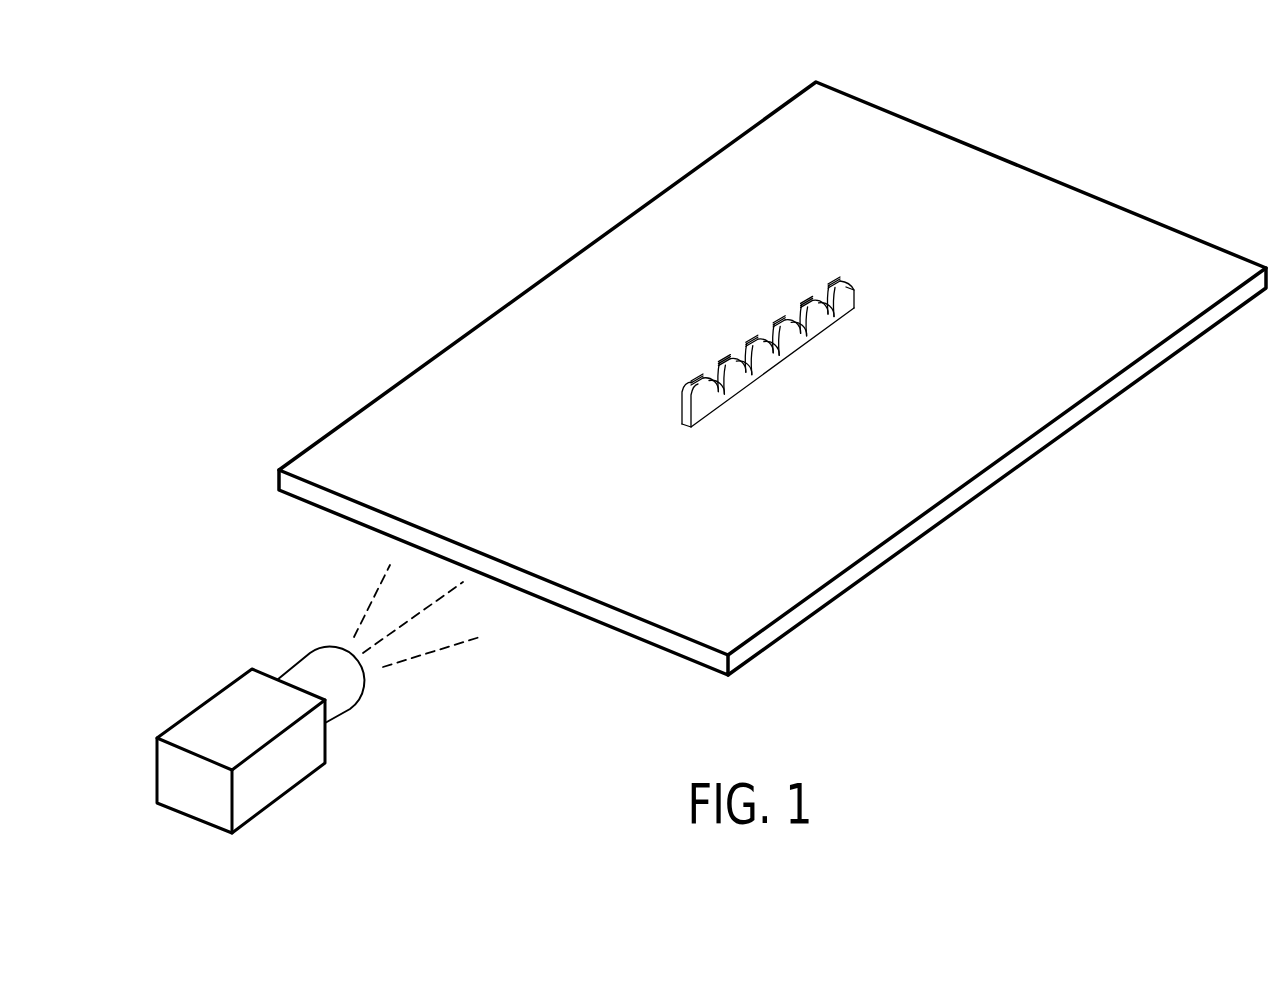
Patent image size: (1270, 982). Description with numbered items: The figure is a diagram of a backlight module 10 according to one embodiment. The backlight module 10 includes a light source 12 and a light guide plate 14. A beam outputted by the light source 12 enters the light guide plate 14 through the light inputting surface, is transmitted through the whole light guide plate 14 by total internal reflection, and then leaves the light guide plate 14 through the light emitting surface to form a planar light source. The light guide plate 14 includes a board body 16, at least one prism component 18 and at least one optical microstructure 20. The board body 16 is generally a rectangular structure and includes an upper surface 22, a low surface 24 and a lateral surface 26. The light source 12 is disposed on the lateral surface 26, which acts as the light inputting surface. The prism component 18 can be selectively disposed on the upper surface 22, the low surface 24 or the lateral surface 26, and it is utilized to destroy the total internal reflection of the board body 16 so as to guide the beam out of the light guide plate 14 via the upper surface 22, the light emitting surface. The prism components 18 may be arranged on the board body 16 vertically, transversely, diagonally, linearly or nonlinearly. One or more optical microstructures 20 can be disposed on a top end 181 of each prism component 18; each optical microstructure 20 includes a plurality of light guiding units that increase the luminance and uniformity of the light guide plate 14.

The backlight module 10 is at (340, 118).
The light source 12 is at (197, 730).
The light guide plate 14 is at (1153, 171).
The board body 16 is at (1053, 258).
The prism component 18 is at (843, 300).
The top end 181 is at (688, 378).
The optical microstructure 20 is at (835, 282).
The upper surface 22 is at (332, 450).
The low surface 24 is at (783, 627).
The lateral surface 26 is at (293, 487).